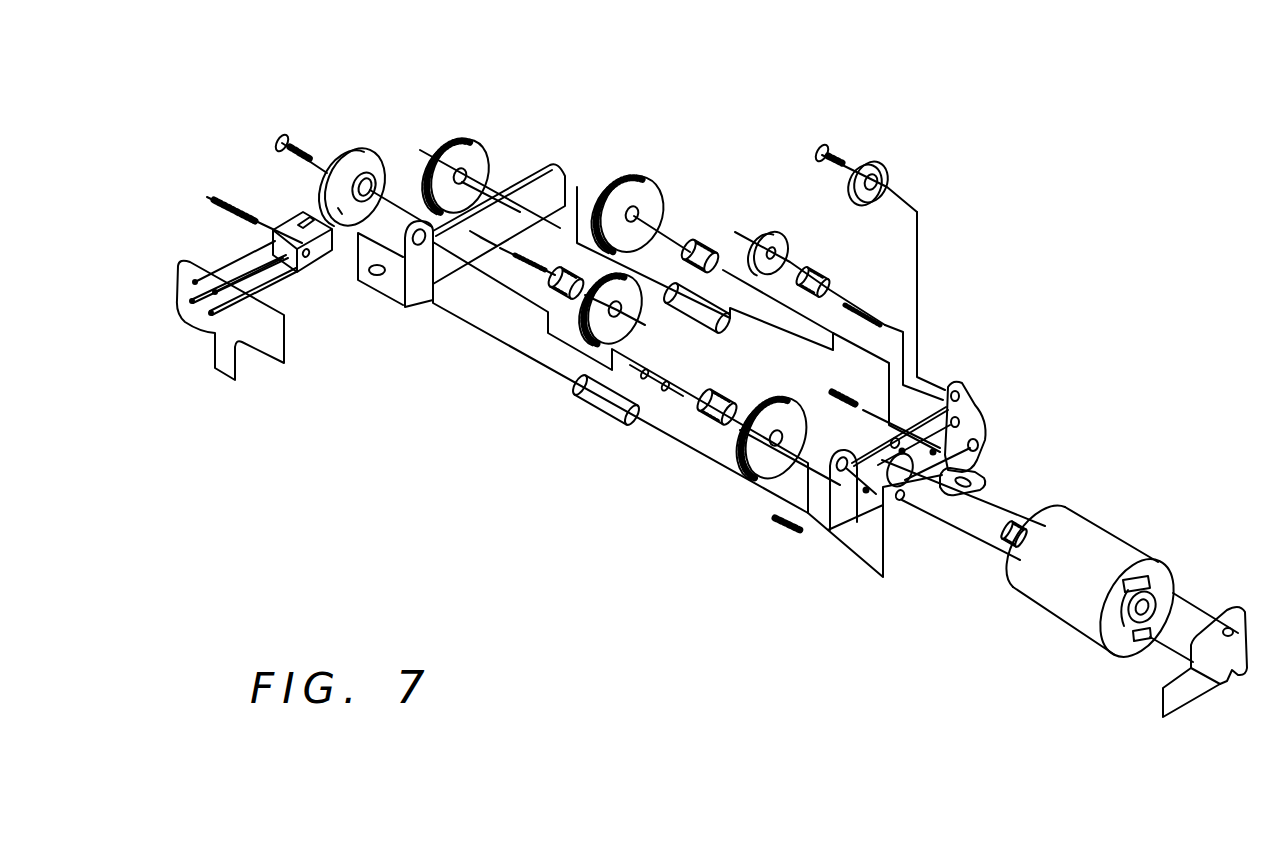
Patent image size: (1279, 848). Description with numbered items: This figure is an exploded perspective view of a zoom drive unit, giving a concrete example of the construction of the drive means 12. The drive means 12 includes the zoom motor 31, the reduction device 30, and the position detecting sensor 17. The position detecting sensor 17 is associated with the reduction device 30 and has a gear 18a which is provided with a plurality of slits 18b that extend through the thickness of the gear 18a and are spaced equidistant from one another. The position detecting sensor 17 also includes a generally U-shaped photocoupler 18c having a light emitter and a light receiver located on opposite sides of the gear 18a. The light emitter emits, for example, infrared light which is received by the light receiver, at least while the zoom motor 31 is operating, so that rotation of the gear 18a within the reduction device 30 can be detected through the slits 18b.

The drive means 12 is at (740, 156).
The position detecting sensor 17 is at (303, 193).
The gear 18a is at (381, 163).
The slits 18b is at (344, 214).
The photocoupler 18c is at (311, 259).
The reduction device 30 is at (794, 561).
The zoom motor 31 is at (1042, 598).